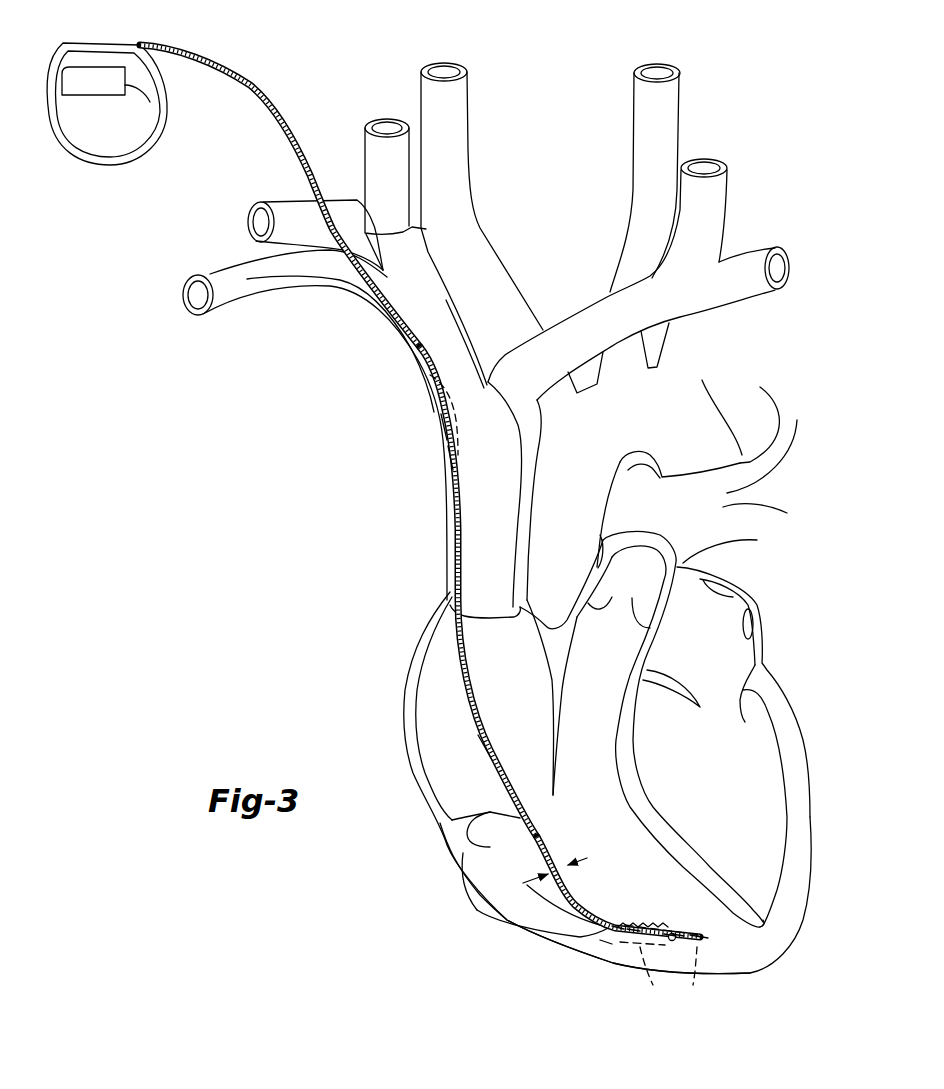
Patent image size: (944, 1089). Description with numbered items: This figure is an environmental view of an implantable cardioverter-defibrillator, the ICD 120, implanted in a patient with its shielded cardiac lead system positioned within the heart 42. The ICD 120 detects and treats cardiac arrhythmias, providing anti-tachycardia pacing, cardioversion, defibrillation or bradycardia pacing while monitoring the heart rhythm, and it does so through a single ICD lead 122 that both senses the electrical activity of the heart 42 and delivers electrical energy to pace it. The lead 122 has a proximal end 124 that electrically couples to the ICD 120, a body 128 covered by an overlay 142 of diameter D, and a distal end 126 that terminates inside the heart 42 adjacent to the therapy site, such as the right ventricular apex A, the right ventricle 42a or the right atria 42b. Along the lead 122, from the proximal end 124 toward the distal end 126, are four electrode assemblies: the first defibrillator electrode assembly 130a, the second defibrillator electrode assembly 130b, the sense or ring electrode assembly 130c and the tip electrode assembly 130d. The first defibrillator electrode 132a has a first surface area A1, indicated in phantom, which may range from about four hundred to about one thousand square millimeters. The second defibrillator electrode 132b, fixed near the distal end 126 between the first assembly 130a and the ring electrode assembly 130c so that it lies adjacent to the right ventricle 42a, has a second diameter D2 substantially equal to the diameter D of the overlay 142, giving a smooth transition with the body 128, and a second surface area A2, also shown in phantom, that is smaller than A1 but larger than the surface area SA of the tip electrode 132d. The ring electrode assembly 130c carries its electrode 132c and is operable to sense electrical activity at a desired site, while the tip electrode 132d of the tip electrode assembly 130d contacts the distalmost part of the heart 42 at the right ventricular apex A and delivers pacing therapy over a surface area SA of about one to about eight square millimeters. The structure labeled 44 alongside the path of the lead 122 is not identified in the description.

The implantable cardioverter-defibrillator 120 is at (90, 66).
The ICD lead 122 is at (113, 168).
The proximal end 124 is at (155, 92).
The distal end 126 is at (620, 942).
The body 128 is at (445, 563).
The first defibrillator electrode assembly 130a is at (440, 423).
The second defibrillator electrode assembly 130b is at (618, 916).
The ring electrode assembly 130c is at (677, 925).
The tip electrode assembly 130d is at (697, 926).
The first defibrillator electrode 132a is at (445, 452).
The second defibrillator electrode 132b is at (634, 918).
The sensor 132c is at (673, 942).
The tip electrode 132d is at (703, 942).
The overlay 142 is at (490, 764).
The heart 42 is at (475, 908).
The right ventricle 42a is at (500, 852).
The right atria 42b is at (445, 729).
The vein leading to heart 44 is at (221, 287).
The right ventricular apex A is at (703, 937).
The first surface area A1 is at (432, 414).
The second surface area A2 is at (651, 977).
The surface area of the tip electrode SA is at (705, 975).
The diameter of the overlay D is at (582, 842).
The second diameter D2 is at (607, 941).